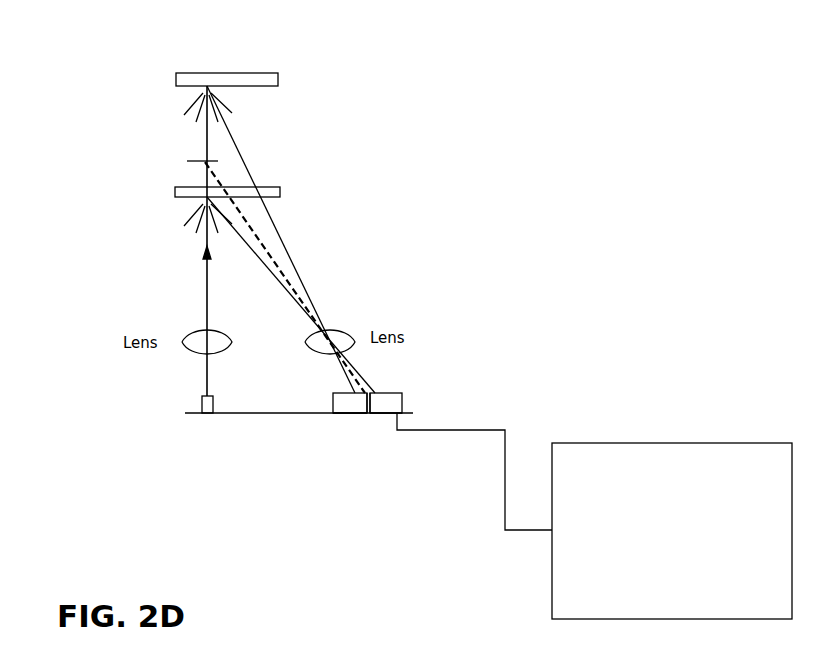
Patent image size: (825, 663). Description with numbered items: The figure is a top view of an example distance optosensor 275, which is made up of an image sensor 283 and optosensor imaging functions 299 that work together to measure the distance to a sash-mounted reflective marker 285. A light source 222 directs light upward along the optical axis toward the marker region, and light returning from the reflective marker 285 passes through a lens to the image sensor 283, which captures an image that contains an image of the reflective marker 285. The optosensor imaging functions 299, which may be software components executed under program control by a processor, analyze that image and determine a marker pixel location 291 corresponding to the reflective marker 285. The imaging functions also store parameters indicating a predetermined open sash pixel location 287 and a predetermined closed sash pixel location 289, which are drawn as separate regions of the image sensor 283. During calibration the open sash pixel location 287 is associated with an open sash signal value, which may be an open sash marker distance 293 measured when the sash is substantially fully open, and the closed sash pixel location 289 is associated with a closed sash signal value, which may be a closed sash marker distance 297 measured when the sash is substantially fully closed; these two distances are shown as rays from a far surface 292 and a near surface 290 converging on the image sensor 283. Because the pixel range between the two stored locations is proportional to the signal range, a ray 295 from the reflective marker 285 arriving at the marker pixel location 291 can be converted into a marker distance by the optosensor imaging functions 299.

The light source 222 is at (200, 397).
The distance optosensor 275 is at (553, 392).
The image sensor 283 is at (400, 393).
The reflective marker 285 is at (188, 158).
The predetermined open sash pixel location 287 is at (352, 403).
The predetermined closed sash pixel location 289 is at (383, 402).
The first reflecting surface 290 is at (268, 187).
The marker pixel location 291 is at (369, 414).
The second reflecting surface 292 is at (268, 73).
The open sash marker distance 293 is at (232, 137).
The light ray from object plane 295 is at (280, 265).
The closed sash marker distance 297 is at (302, 298).
The optosensor imaging functions 299 is at (672, 531).